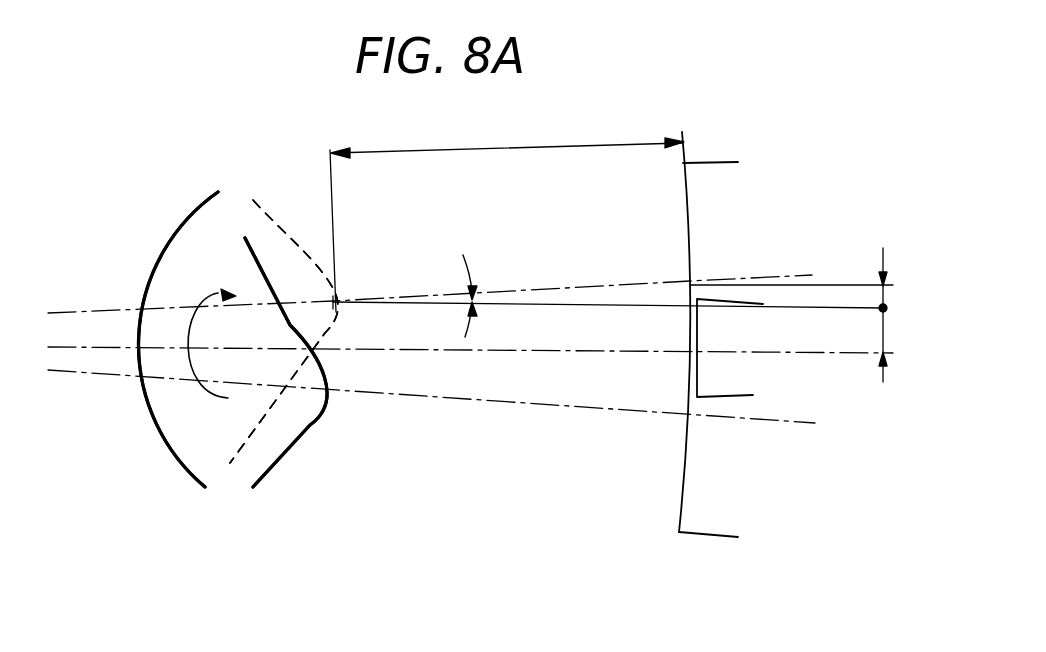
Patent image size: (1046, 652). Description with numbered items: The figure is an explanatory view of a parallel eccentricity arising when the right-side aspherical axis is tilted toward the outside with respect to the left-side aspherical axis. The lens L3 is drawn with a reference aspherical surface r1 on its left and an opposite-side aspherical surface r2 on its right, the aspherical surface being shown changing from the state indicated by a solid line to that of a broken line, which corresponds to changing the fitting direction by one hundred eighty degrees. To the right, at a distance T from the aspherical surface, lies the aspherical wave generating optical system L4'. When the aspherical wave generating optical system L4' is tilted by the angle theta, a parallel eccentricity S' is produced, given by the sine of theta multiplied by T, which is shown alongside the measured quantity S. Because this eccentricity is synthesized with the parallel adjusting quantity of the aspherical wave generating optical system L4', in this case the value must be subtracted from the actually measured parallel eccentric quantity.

The third lens (meniscus lens) L3 is at (258, 228).
The reference aspherical surface r1 is at (178, 339).
The opposite-side aspherical surface r2 is at (284, 353).
The distance between the aspherical surface and the aspherical wave generating optic T is at (507, 215).
The aspherical wave generating optical system L4' is at (721, 334).
The parallel eccentricity S' is at (902, 283).
The image shift S is at (897, 345).